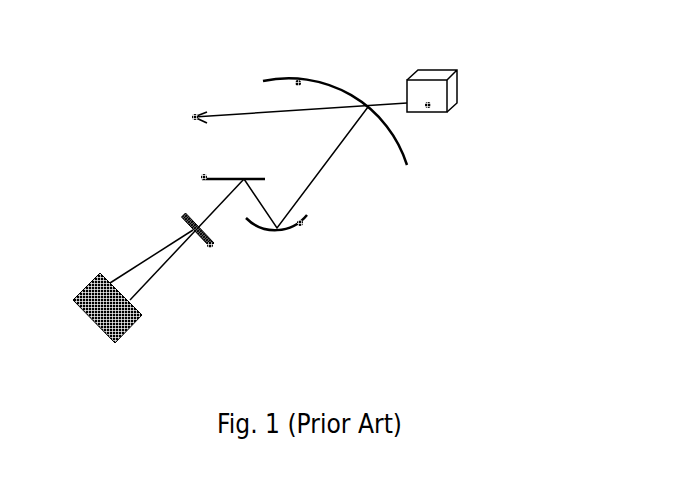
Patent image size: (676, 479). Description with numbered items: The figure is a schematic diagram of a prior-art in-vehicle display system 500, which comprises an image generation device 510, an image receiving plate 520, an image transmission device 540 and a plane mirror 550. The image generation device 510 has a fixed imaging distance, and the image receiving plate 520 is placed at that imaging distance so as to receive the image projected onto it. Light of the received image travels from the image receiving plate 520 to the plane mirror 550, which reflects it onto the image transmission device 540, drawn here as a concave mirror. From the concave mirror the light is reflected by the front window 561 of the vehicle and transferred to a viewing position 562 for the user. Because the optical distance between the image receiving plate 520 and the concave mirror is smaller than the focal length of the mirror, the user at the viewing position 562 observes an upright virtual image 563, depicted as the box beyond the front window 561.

The in-vehicle display system 500 is at (463, 25).
The image generation device 510 is at (127, 328).
The image receiving plate 520 is at (211, 248).
The image transmission device 540 is at (298, 226).
The plane mirror 550 is at (201, 176).
The front window 561 is at (297, 81).
The viewing position 562 is at (192, 115).
The upright virtual image 563 is at (430, 107).